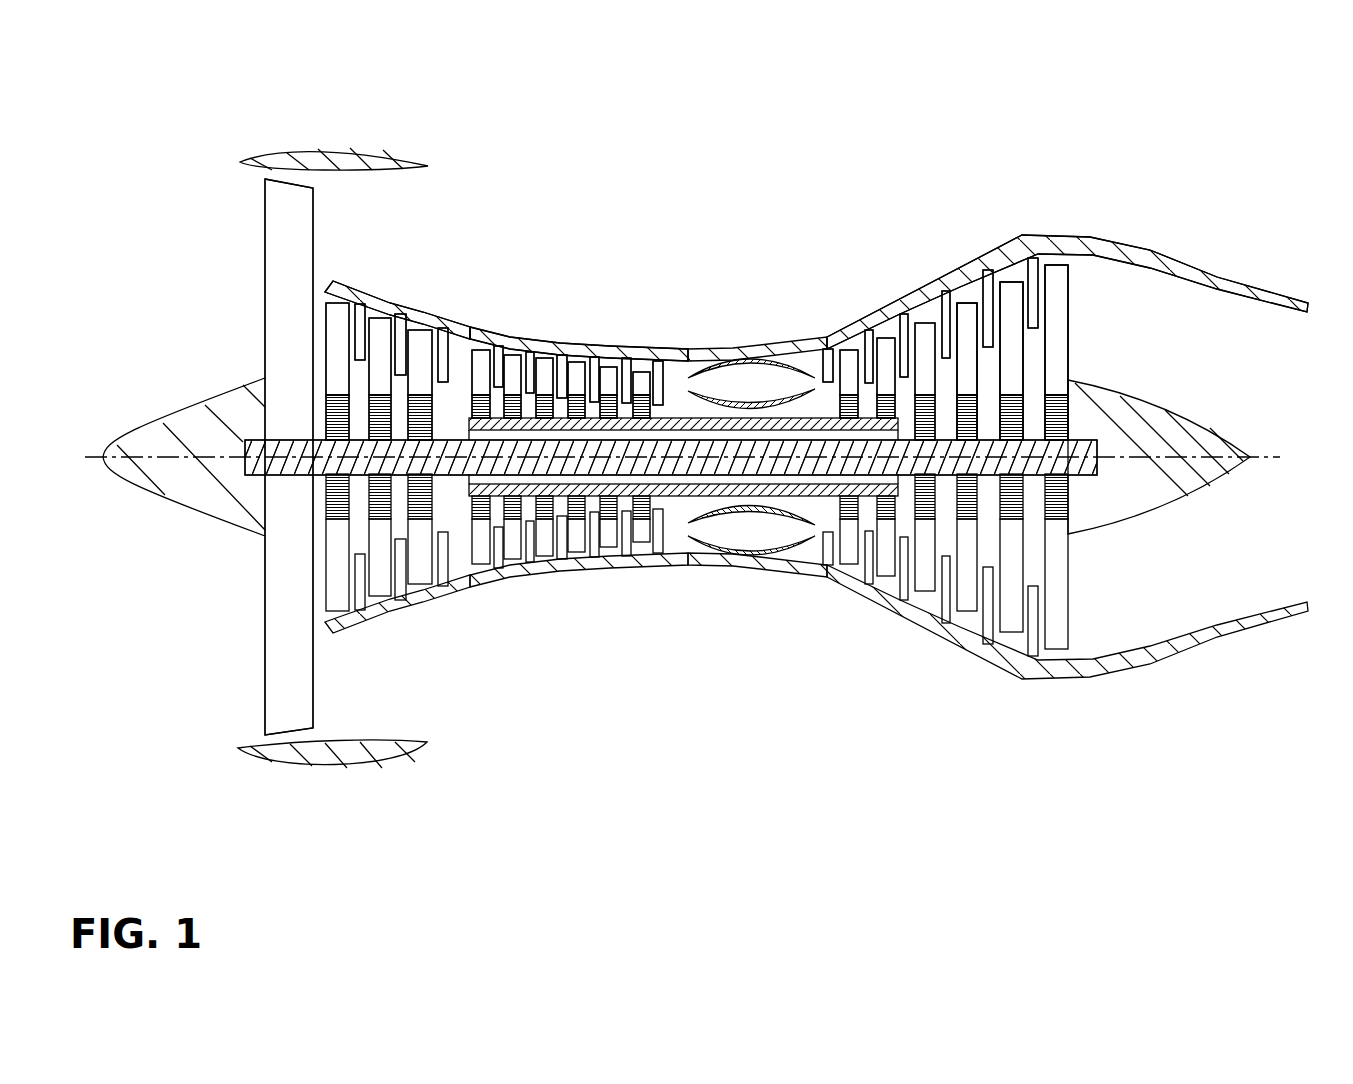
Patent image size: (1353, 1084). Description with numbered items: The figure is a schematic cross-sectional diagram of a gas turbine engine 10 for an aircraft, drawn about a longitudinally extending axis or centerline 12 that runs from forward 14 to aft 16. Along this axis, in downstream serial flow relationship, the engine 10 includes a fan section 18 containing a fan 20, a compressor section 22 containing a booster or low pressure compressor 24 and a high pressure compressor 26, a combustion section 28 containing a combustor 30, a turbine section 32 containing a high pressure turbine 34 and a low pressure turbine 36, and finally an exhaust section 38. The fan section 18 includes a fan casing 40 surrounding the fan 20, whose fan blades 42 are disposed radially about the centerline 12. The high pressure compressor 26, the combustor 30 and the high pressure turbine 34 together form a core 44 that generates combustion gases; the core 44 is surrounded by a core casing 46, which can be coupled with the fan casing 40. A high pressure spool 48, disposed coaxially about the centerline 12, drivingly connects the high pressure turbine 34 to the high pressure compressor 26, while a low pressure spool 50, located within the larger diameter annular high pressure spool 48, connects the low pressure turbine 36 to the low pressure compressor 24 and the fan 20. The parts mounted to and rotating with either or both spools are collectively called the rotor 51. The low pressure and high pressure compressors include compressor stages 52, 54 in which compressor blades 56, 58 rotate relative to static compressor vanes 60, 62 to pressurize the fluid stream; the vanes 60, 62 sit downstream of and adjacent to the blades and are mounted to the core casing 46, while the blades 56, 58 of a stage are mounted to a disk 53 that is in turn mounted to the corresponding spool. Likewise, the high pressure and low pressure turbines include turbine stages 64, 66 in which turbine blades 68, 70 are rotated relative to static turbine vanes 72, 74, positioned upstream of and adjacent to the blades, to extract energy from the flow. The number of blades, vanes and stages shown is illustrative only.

The gas turbine engine 10 is at (132, 82).
The centerline 12 is at (163, 455).
The forward 14 is at (95, 457).
The aft 16 is at (1260, 457).
The fan section 18 is at (318, 810).
The fan 20 is at (258, 241).
The compressor section 22 is at (322, 810).
The low pressure compressor 24 is at (457, 604).
The high pressure compressor 26 is at (620, 578).
The combustion section 28 is at (837, 810).
The combustor 30 is at (808, 362).
The turbine section 32 is at (1063, 810).
The high pressure turbine 34 is at (823, 598).
The low pressure turbine 36 is at (950, 640).
The exhaust section 38 is at (1067, 810).
The fan casing 40 is at (337, 148).
The fan blades 42 is at (277, 677).
The core 44 is at (898, 668).
The core casing 46 is at (733, 350).
The high pressure spool 48 is at (683, 415).
The low pressure spool 50 is at (450, 440).
The rotor 51 is at (600, 440).
The compressor stages 52 is at (323, 268).
The disk 53 is at (967, 407).
The compressor stages 54 is at (483, 313).
The compressor blades 56 is at (340, 313).
The compressor blades 58 is at (483, 357).
The static compressor vanes 60 is at (357, 360).
The static compressor vanes 62 is at (502, 360).
The turbine stages 64 is at (855, 310).
The turbine stages 66 is at (985, 247).
The turbine blades 68 is at (888, 357).
The turbine blades 70 is at (1010, 303).
The static turbine vanes 72 is at (870, 350).
The static turbine vanes 74 is at (992, 280).